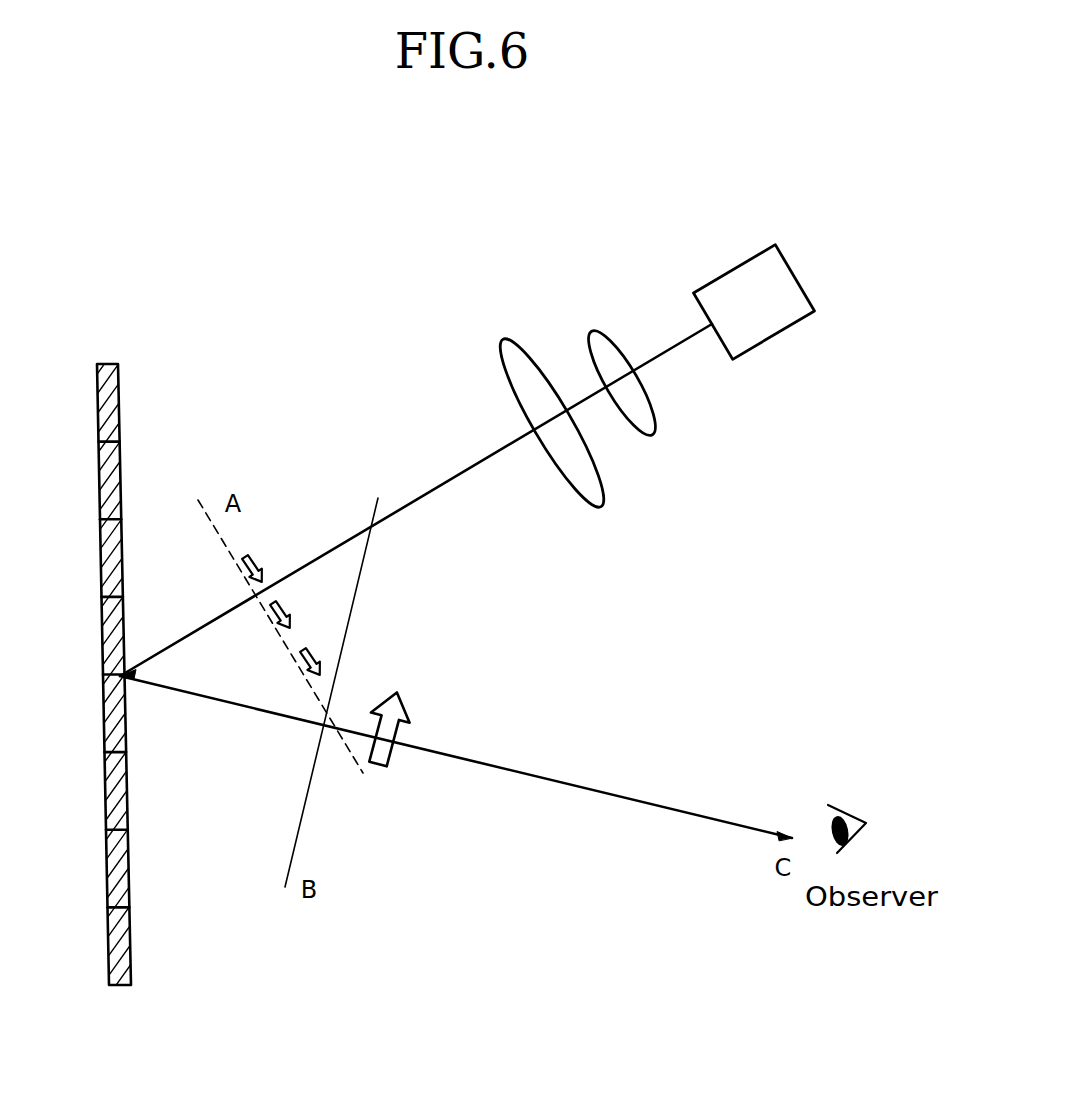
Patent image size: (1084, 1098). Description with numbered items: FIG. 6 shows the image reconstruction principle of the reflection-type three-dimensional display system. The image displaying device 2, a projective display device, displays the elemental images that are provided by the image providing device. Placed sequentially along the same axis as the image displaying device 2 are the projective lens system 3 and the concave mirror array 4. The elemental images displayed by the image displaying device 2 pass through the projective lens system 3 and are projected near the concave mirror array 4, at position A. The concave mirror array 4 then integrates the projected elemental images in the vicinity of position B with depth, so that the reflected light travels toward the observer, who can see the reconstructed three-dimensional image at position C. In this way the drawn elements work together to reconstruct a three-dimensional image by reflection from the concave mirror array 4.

The image displaying device 2 is at (736, 270).
The projective lens system 3 is at (558, 286).
The concave mirror array 4 is at (104, 548).